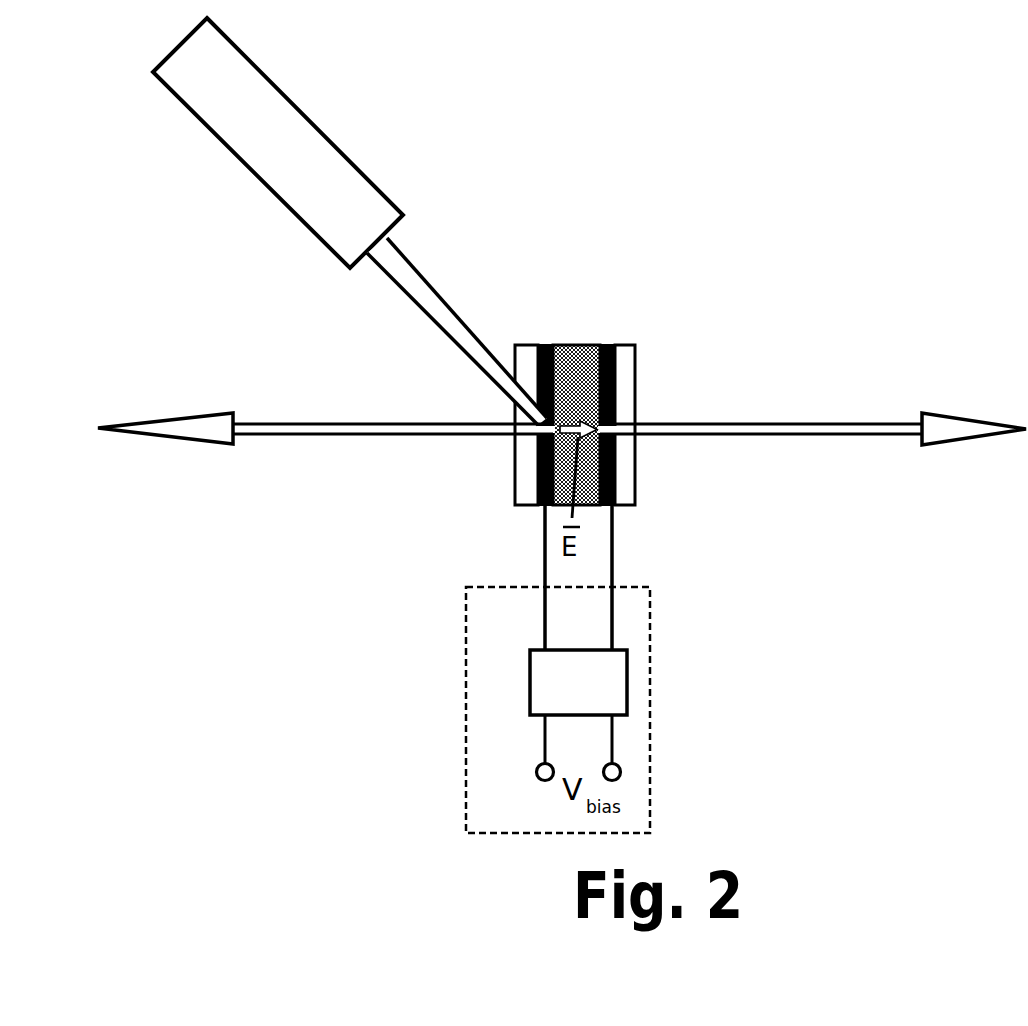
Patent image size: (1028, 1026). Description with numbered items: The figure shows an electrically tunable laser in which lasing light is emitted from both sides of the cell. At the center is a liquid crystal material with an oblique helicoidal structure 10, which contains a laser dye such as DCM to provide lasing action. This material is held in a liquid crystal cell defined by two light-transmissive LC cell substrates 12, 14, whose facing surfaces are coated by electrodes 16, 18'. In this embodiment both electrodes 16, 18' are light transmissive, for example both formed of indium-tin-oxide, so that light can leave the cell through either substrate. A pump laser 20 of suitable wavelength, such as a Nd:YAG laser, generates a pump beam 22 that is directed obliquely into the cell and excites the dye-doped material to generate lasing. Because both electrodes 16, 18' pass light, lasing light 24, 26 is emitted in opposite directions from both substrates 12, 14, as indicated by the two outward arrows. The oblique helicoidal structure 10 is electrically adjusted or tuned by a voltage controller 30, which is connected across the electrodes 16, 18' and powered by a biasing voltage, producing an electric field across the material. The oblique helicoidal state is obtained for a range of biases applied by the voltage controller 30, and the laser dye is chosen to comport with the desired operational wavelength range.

The liquid crystal material with oblique helicoidal structure 10 is at (575, 345).
The LC cell substrate 12 is at (525, 485).
The LC cell substrate 14 is at (637, 485).
The electrode 16 is at (547, 345).
The electrode 18' is at (619, 385).
The pump laser 20 is at (255, 177).
The pump beam 22 is at (430, 300).
The lasing light 24 is at (368, 436).
The lasing light 26 is at (805, 436).
The voltage controller 30 is at (528, 683).